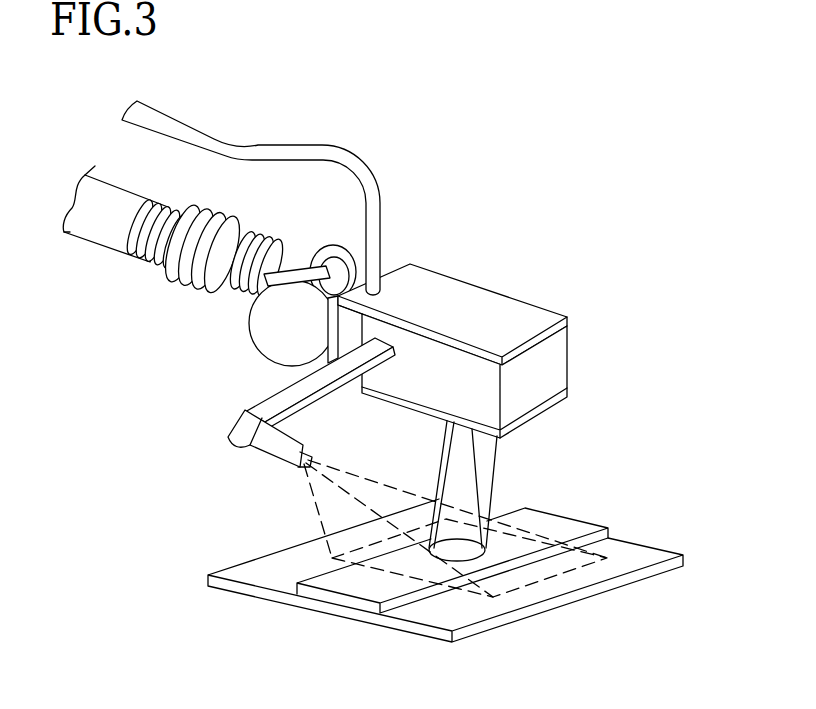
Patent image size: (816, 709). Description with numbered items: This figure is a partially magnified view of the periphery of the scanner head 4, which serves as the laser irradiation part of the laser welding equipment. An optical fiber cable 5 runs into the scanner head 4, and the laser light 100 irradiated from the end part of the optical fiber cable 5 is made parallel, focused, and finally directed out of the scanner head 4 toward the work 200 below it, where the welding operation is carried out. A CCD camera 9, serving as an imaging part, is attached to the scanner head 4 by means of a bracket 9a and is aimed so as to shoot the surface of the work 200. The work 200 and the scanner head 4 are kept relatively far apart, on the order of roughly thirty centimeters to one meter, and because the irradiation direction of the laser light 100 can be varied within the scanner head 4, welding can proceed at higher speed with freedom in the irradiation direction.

The scanner head 4 is at (468, 292).
The optical fiber cable 5 is at (241, 144).
The CCD camera 9 is at (268, 450).
The bracket 9a is at (283, 398).
The laser light 100 is at (486, 472).
The work 200 is at (642, 558).